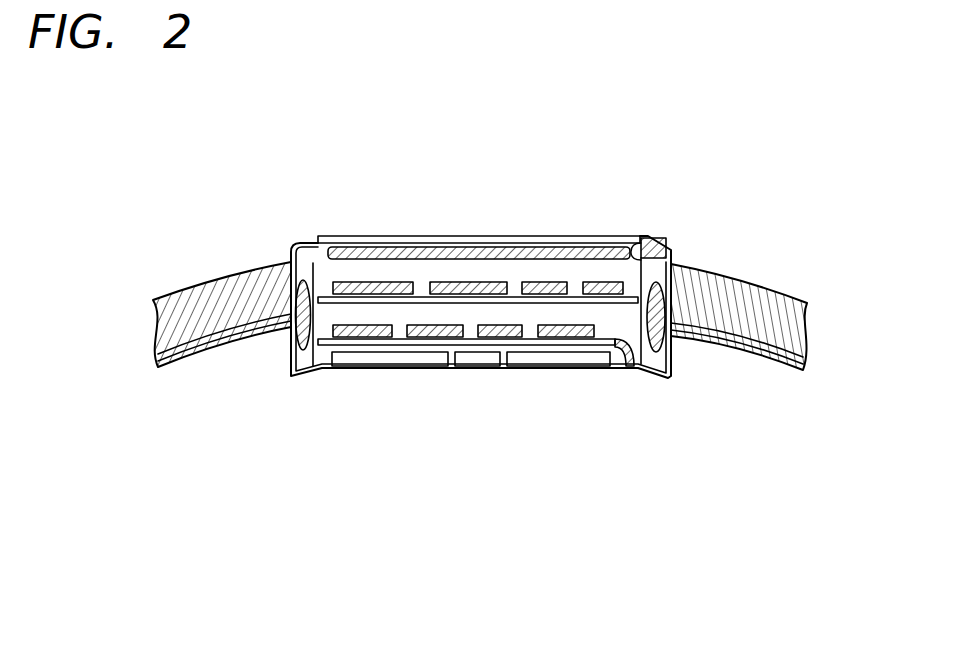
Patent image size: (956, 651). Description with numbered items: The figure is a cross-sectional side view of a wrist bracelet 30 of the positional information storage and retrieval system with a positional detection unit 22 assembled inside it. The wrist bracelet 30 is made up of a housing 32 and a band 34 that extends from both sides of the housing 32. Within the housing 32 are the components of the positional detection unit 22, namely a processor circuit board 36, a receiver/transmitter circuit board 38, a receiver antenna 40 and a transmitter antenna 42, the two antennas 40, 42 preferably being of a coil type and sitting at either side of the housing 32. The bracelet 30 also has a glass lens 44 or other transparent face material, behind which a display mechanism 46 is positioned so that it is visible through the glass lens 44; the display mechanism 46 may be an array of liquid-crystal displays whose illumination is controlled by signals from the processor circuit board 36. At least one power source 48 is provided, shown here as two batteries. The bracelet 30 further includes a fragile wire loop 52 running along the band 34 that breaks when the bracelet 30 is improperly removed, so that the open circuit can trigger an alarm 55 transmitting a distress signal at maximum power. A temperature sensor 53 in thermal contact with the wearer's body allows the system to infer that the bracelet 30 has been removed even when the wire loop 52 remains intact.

The positional detection unit 22 is at (453, 236).
The wrist bracelet 30 is at (325, 131).
The housing 32 is at (306, 240).
The band 34 is at (232, 272).
The processor circuit board 36 is at (313, 265).
The receiver/transmitter circuit board 38 is at (610, 353).
The receiver antenna 40 is at (291, 338).
The transmitter antenna 42 is at (670, 338).
The glass lens 44 is at (612, 234).
The display mechanism 46 is at (527, 236).
The power source 48 is at (392, 362).
The wire loop 52 is at (183, 360).
The temperature sensor 53 is at (478, 363).
The alarm 55 is at (669, 229).